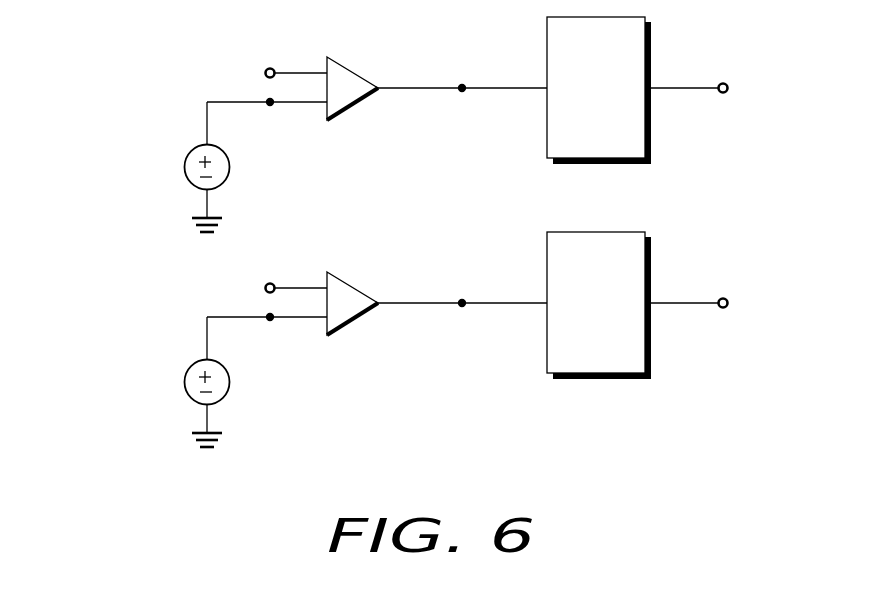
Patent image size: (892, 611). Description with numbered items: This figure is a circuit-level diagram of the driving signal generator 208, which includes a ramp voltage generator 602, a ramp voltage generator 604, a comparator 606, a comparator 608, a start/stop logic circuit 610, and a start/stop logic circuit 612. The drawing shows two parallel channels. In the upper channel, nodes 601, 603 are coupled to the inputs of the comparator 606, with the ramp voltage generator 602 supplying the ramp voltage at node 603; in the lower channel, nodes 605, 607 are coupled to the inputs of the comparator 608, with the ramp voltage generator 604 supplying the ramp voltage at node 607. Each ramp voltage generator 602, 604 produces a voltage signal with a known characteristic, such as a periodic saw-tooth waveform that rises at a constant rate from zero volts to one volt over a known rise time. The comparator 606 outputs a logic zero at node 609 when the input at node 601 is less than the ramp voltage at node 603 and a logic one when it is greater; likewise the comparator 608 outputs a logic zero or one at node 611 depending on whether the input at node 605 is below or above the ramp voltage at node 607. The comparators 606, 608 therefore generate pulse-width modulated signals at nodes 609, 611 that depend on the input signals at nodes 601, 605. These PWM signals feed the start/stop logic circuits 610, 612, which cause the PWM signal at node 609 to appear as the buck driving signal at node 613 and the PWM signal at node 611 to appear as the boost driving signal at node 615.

The driving signal generator 208 is at (472, 462).
The node 601 is at (268, 66).
The ramp voltage generator 602 is at (185, 162).
The node 603 is at (270, 106).
The ramp voltage generator 604 is at (185, 377).
The node 605 is at (268, 281).
The comparator 606 is at (359, 104).
The node 607 is at (270, 321).
The comparator 608 is at (359, 319).
The node 609 is at (462, 84).
The start/stop logic circuit 610 is at (623, 132).
The node 611 is at (462, 299).
The start/stop logic circuit 612 is at (623, 347).
The node 613 is at (722, 81).
The node 615 is at (722, 296).